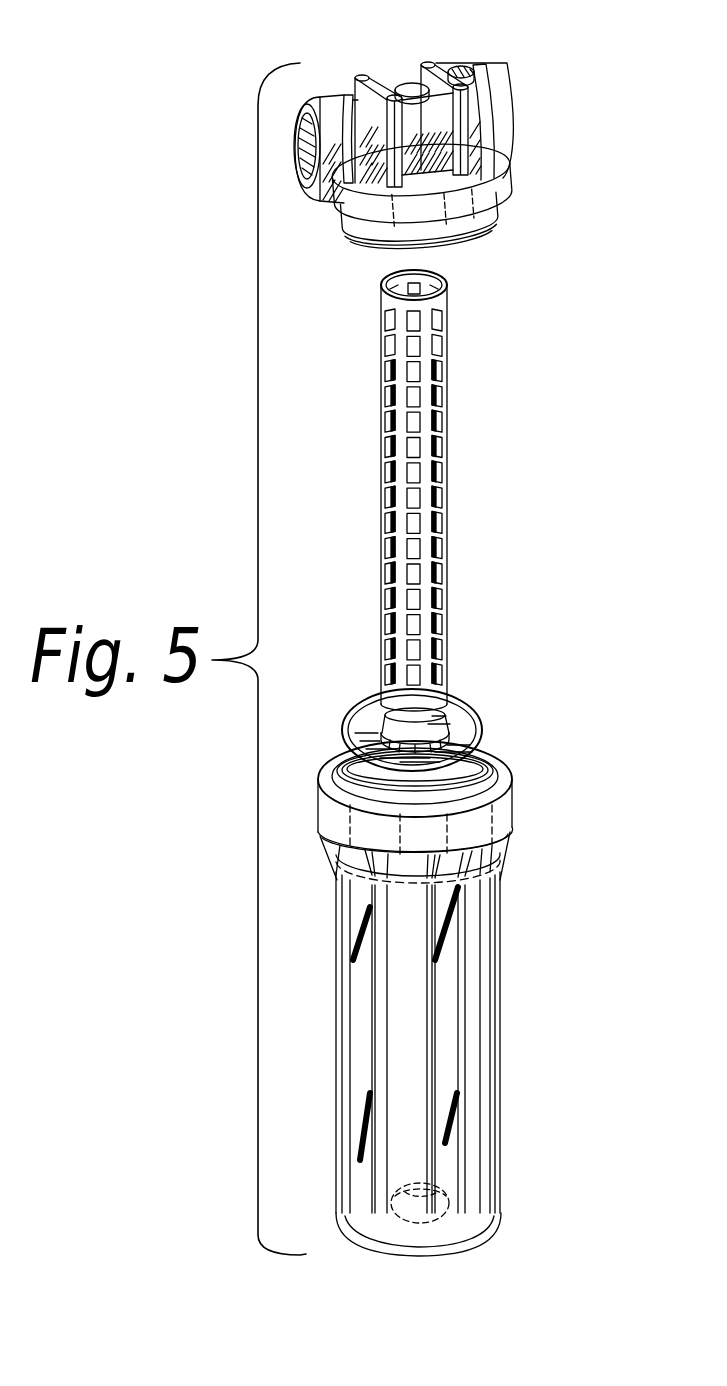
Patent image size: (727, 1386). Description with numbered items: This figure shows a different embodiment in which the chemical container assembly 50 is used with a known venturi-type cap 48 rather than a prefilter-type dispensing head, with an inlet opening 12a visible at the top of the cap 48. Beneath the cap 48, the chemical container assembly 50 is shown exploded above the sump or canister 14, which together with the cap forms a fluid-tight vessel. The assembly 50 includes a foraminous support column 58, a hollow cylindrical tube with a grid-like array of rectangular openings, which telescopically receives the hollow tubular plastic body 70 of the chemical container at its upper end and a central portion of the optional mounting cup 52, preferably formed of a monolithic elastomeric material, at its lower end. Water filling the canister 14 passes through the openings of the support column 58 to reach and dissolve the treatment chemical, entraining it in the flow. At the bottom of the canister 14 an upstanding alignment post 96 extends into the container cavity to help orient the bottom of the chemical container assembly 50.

The venturi-type cap 48 is at (514, 103).
The inlet opening 12a is at (398, 83).
The foraminous support column 58 is at (422, 288).
The hollow tubular plastic body 70 is at (441, 366).
The chemical container assembly 50 is at (475, 389).
The mounting cup 52 is at (481, 712).
The canister 14 is at (500, 1035).
The alignment post 96 is at (448, 1200).